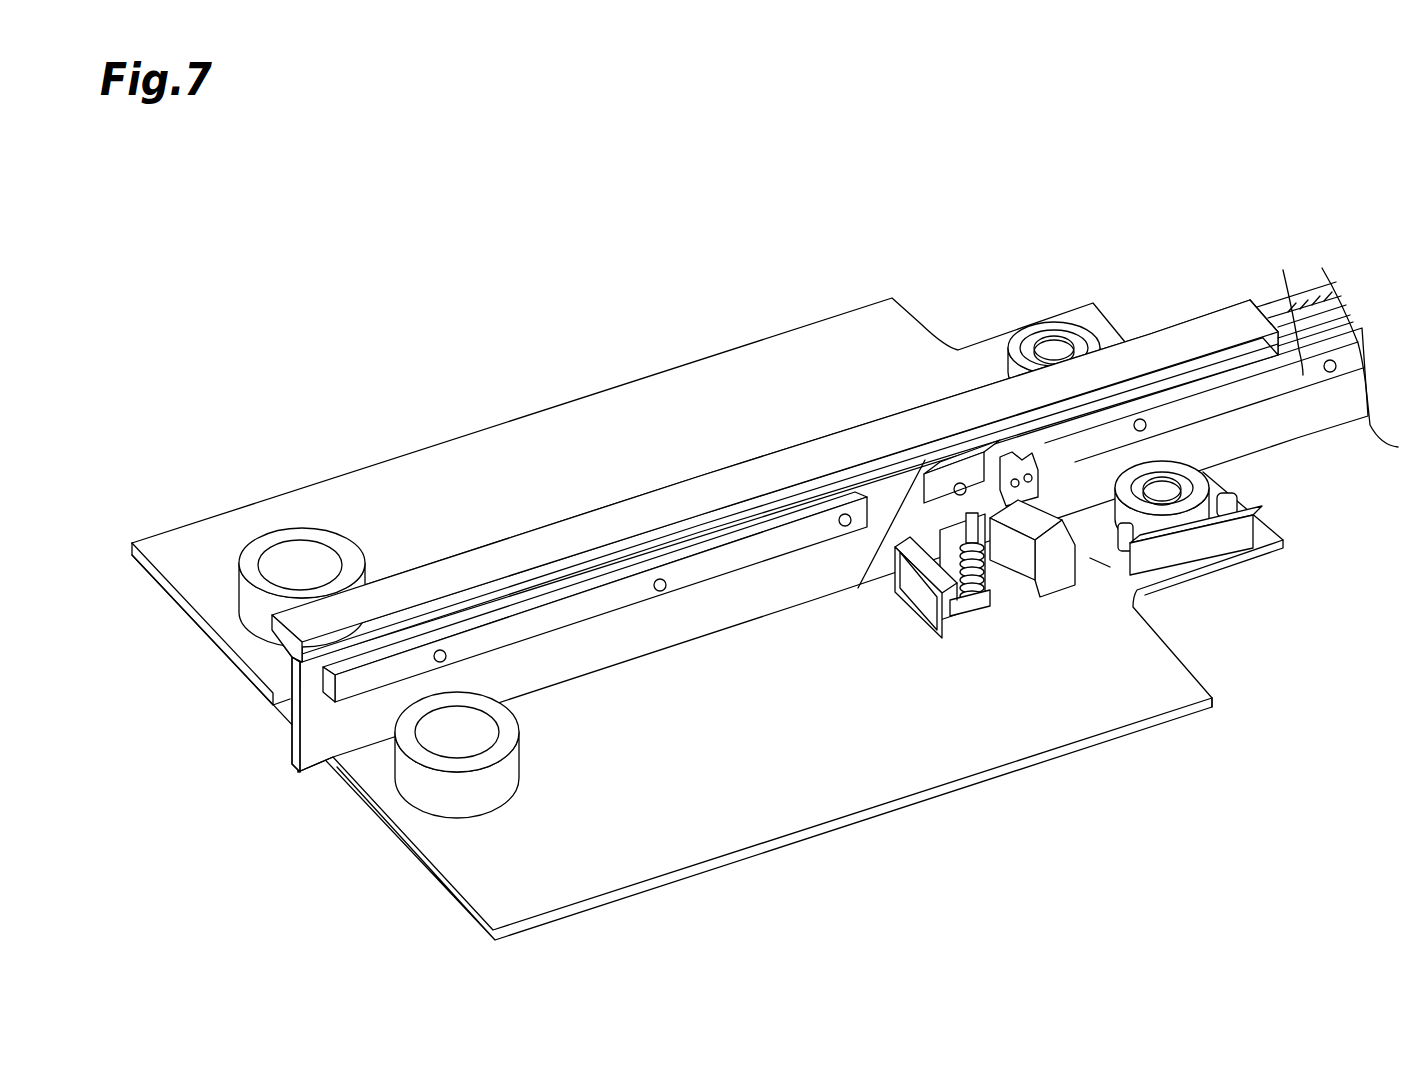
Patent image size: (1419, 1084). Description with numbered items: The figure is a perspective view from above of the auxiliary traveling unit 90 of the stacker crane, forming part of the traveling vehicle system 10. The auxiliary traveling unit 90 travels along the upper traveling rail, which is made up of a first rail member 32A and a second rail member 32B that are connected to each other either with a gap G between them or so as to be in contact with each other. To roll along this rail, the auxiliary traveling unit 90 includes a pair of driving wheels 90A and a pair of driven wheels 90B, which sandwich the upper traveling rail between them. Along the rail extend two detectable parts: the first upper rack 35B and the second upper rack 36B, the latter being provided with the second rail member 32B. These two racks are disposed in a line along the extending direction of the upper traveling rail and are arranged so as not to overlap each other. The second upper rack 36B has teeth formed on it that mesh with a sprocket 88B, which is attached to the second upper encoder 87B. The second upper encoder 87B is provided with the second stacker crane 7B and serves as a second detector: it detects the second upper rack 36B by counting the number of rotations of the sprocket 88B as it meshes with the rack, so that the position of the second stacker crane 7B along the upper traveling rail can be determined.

The second stacker crane 7B is at (1216, 700).
The traveling vehicle system 10 is at (875, 730).
The first rail member 32A is at (320, 748).
The second rail member 32B is at (1337, 425).
The first upper rack 35B is at (585, 606).
The second upper rack 36B is at (1312, 372).
The second upper encoder 87B is at (1052, 586).
The sprocket 88B is at (968, 470).
The auxiliary traveling unit 90 is at (977, 308).
The driving wheels 90A is at (248, 612).
The driven wheels 90B is at (1046, 322).
The gap G is at (875, 558).